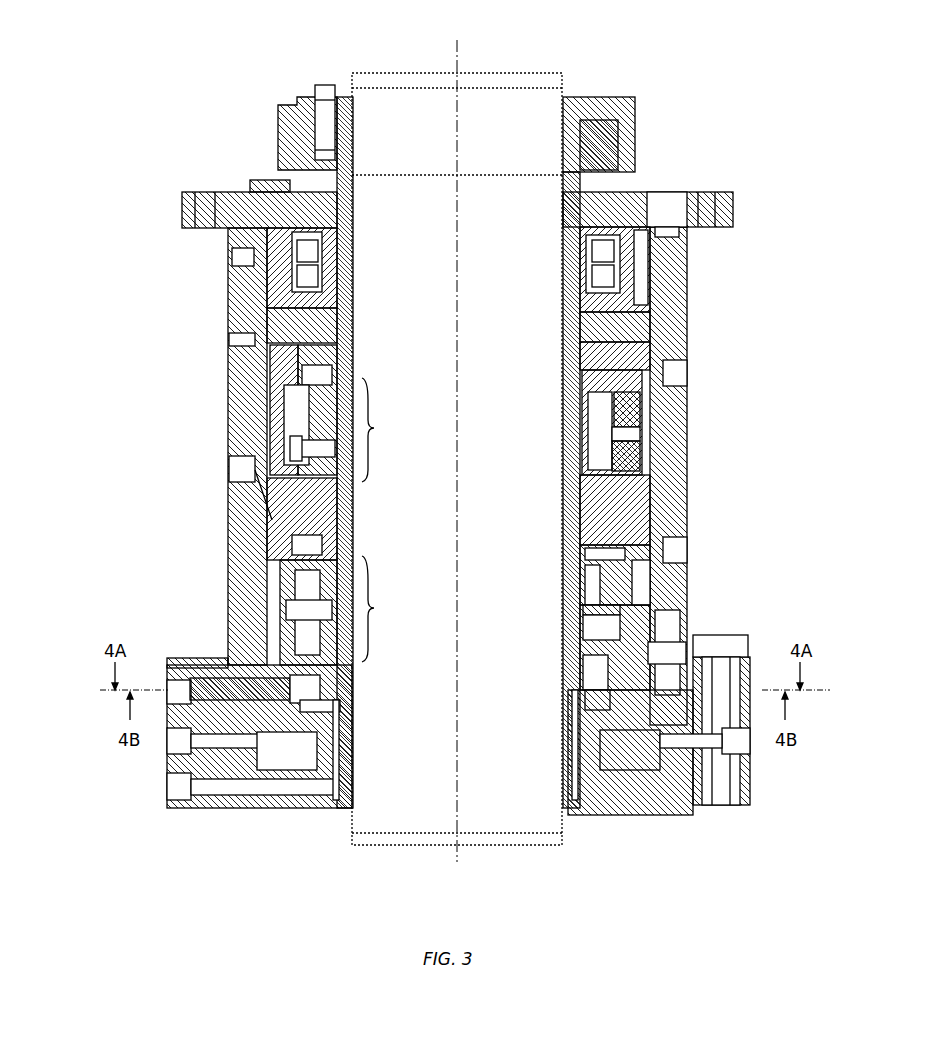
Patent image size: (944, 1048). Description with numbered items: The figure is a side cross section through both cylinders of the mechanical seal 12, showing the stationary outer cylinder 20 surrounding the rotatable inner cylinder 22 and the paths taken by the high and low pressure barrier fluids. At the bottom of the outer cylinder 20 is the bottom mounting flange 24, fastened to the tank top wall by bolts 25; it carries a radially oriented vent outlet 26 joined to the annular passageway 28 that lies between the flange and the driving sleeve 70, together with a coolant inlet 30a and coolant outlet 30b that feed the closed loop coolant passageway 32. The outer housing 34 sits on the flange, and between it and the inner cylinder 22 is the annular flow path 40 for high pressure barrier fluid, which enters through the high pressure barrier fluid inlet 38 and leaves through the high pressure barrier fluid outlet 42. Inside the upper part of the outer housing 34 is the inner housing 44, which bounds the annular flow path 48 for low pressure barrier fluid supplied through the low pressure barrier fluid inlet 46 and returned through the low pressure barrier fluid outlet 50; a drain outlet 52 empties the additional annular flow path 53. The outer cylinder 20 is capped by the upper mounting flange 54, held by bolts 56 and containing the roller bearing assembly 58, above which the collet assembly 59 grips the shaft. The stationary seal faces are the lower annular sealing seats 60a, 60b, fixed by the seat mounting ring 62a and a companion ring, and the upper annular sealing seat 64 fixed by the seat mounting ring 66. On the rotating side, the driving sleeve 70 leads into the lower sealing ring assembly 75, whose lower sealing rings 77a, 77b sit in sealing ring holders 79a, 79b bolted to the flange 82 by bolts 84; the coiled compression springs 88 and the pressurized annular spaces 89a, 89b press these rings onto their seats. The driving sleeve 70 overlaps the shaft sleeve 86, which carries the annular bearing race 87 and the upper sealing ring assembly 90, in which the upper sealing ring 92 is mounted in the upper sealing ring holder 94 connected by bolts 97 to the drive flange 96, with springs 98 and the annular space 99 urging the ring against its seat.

The mechanical seal 12 is at (208, 71).
The outer cylinder 20 is at (222, 384).
The inner cylinder 22 is at (366, 368).
The bottom mounting flange 24 is at (650, 810).
The bolts 25 is at (732, 646).
The vent outlet 26 is at (165, 787).
The annular passageway 28 is at (342, 788).
The coolant inlet 30a is at (165, 742).
The coolant outlet 30b is at (752, 742).
The coolant passageway 32 is at (298, 763).
The outer housing 34 is at (690, 512).
The high pressure barrier fluid inlet 38 is at (168, 682).
The annular flow path 40 is at (228, 575).
The high pressure barrier fluid outlet 42 is at (690, 545).
The inner housing 44 is at (278, 530).
The low pressure barrier fluid inlet 46 is at (228, 462).
The annular flow path 48 is at (228, 417).
The low pressure barrier fluid outlet 50 is at (690, 372).
The drain outlet 52 is at (228, 338).
The annular flow path 53 is at (345, 318).
The upper mounting flange 54 is at (635, 196).
The bolts 56 is at (677, 206).
The roller bearing assembly 58 is at (640, 240).
The collet assembly 59 is at (637, 102).
The lower annular sealing seat 60a is at (352, 707).
The lower annular sealing seat 60b is at (352, 541).
The seat mounting ring 62a is at (568, 752).
The upper annular sealing seat 64 is at (578, 375).
The seat mounting ring 66 is at (578, 345).
The driving sleeve 70 is at (350, 740).
The lower sealing ring assembly 75 is at (383, 609).
The lower sealing ring 77a is at (568, 683).
The lower sealing ring 77b is at (568, 577).
The sealing ring holder 79a is at (675, 598).
The sealing ring holder 79b is at (690, 585).
The flange 82 is at (566, 633).
The bolts 84 is at (228, 606).
The shaft sleeve 86 is at (350, 500).
The annular bearing race 87 is at (354, 255).
The coiled compression springs 88 is at (568, 609).
The annular space 89a is at (570, 705).
The annular space 89b is at (573, 565).
The upper sealing ring assembly 90 is at (383, 430).
The upper sealing ring 92 is at (575, 397).
The upper sealing ring holder 94 is at (645, 428).
The drive flange 96 is at (578, 440).
The bolts 97 is at (338, 432).
The springs 98 is at (622, 437).
The annular space 99 is at (626, 460).